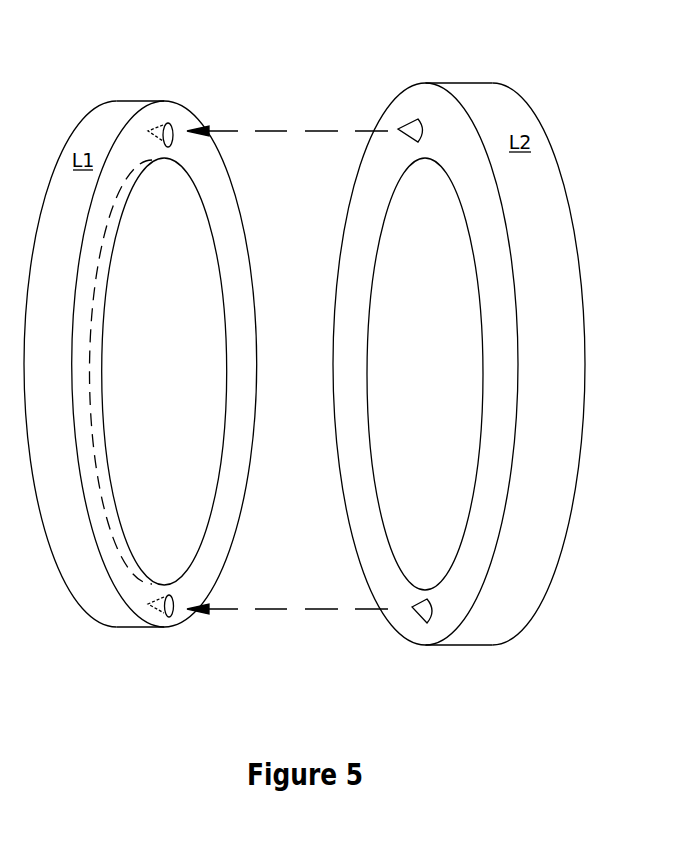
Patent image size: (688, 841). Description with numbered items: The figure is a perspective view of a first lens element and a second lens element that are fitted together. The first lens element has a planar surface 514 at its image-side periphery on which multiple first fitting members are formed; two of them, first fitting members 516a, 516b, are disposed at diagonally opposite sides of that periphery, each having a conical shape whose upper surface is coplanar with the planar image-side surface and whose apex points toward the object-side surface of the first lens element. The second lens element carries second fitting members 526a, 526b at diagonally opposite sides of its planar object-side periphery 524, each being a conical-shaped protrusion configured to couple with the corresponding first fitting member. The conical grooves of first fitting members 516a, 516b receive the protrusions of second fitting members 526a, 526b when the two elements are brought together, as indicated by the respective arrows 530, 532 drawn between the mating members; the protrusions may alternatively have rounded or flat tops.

The planar surface 514 is at (222, 213).
The first fitting member 516a is at (167, 124).
The first fitting member 516b is at (167, 613).
The object-side periphery 524 is at (361, 476).
The second fitting member 526a is at (408, 123).
The second fitting member 526b is at (417, 617).
The arrow 530 is at (287, 121).
The arrow 532 is at (287, 599).